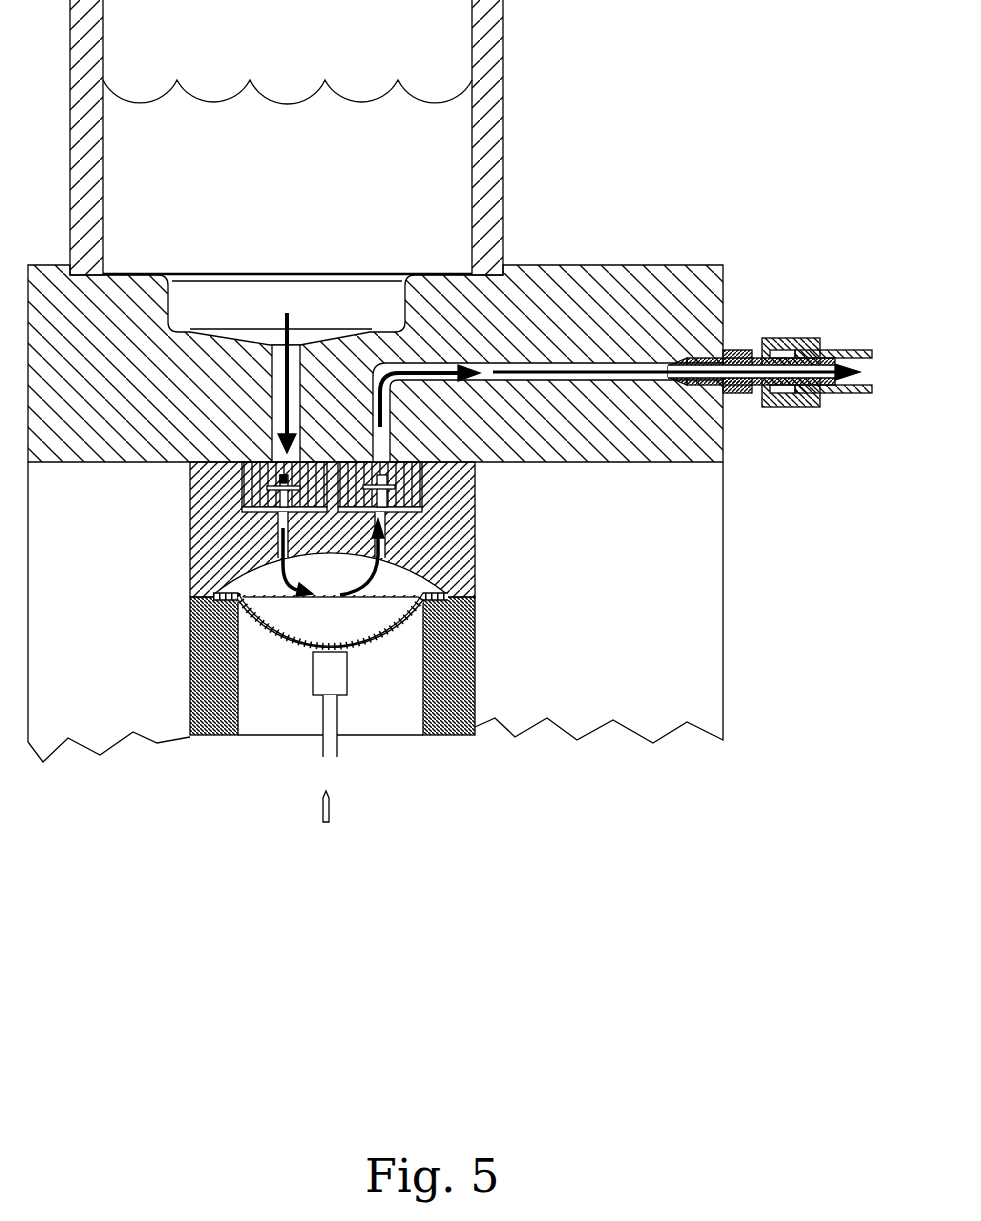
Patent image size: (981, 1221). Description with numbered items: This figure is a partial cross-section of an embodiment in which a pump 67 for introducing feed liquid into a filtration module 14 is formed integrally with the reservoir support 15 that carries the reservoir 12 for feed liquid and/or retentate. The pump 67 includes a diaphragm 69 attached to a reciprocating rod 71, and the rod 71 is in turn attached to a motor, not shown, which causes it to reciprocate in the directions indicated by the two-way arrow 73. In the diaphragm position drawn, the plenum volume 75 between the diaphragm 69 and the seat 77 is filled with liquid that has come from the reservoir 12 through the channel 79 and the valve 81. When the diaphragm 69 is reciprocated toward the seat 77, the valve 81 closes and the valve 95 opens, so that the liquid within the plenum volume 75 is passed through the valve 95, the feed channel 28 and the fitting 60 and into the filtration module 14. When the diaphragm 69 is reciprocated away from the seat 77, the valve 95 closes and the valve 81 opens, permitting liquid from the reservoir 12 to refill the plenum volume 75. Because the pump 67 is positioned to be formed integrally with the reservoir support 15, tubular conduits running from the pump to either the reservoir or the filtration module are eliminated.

The reservoir 12 is at (490, 149).
The filtration module 14 is at (855, 395).
The reservoir support 15 is at (673, 660).
The feed channel 28 is at (543, 362).
The fitting 60 is at (778, 337).
The pump 67 is at (476, 550).
The diaphragm 69 is at (393, 630).
The reciprocating rod 71 is at (327, 678).
The two-way arrow 73 is at (340, 800).
The plenum volume 75 is at (358, 636).
The seat 77 is at (333, 557).
The channel 79 is at (293, 362).
The valve 81 is at (273, 480).
The valve 95 is at (390, 470).